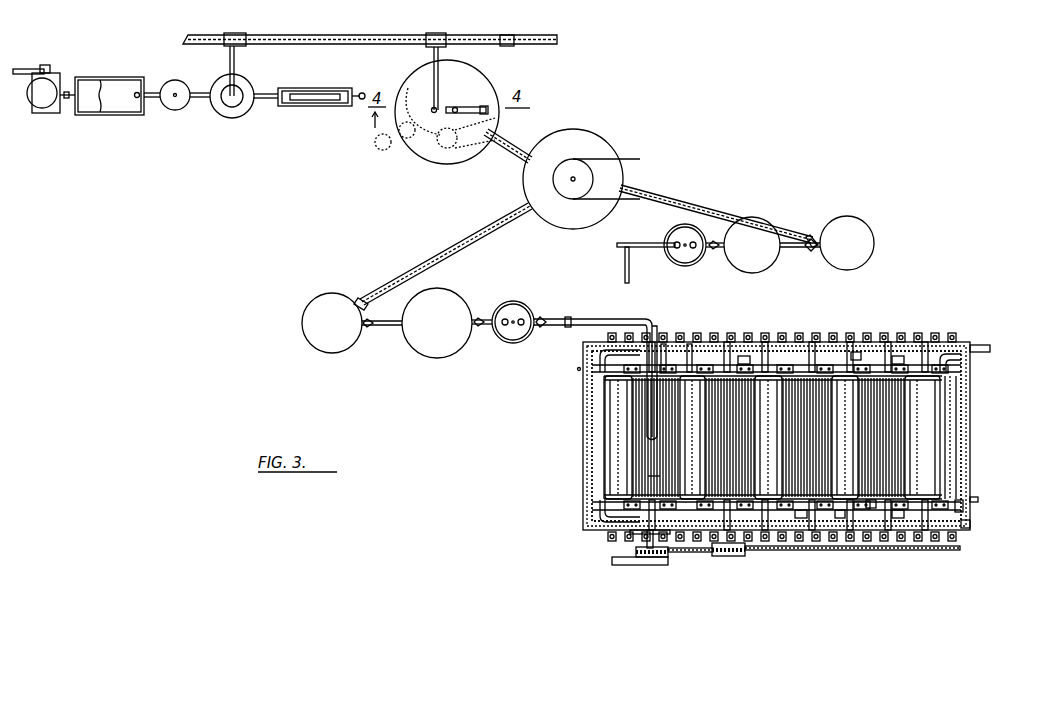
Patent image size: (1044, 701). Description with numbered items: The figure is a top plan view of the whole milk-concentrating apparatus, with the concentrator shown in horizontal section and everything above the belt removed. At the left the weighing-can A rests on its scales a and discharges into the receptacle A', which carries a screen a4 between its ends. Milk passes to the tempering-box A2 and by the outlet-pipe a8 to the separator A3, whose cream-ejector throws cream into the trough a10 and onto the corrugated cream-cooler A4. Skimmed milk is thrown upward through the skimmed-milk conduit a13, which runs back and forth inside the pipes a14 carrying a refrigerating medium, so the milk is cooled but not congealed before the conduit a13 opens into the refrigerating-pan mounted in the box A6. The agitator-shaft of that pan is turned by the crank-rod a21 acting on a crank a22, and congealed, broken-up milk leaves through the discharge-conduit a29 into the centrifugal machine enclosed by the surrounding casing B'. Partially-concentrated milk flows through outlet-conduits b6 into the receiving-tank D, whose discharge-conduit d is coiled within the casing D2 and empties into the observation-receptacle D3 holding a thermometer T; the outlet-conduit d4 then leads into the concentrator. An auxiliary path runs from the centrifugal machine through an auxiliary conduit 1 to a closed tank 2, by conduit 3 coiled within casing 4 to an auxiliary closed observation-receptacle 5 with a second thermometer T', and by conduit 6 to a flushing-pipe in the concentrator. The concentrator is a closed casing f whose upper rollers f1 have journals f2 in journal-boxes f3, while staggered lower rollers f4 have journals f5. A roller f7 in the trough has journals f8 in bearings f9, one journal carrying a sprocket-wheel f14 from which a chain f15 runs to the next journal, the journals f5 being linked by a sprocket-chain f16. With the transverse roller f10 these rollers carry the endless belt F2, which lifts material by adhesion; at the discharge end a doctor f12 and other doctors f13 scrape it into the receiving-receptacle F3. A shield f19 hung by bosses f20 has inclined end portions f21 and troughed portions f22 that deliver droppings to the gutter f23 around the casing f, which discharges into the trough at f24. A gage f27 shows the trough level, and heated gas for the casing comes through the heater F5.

The scales a is at (42, 70).
The weighing-can A is at (43, 93).
The receptacle A' is at (109, 87).
The screen a4 is at (101, 94).
The tempering-box A2 is at (175, 86).
The outlet-pipe a8 is at (202, 100).
The separator A3 is at (232, 104).
The skimmed-milk conduit a13 is at (236, 68).
The trough a10 is at (266, 101).
The corrugated cream-cooler A4 is at (321, 108).
The pipes a14 is at (318, 37).
The box A6 is at (437, 112).
The crank a22 is at (458, 108).
The crank-rod a21 is at (477, 114).
The discharge-conduit a29 is at (508, 144).
The surrounding casing B' is at (581, 179).
The auxiliary conduit 1 is at (670, 205).
The second thermometer T' is at (685, 243).
The conduit 6 is at (640, 248).
The auxiliary closed observation-receptacle 5 is at (690, 262).
The casing 4 is at (752, 245).
The conduit 3 is at (800, 254).
The closed tank 2 is at (847, 243).
The outlet-conduits b6 is at (453, 253).
The receiving-tank D is at (332, 323).
The discharge-conduit d is at (381, 326).
The casing D2 is at (437, 323).
The thermometer T is at (518, 304).
The observation-receptacle D3 is at (511, 330).
The outlet-conduit d4 is at (606, 321).
The closed casing f is at (968, 389).
The rollers f1 is at (965, 510).
The journals f2 is at (695, 333).
The journal-boxes f3 is at (730, 334).
The journals f5 is at (812, 333).
The endless belt F2 is at (773, 437).
The doctors f13 is at (963, 430).
The gutter discharge f24 is at (602, 350).
The gutter f23 is at (590, 351).
The gage f27 is at (577, 370).
The transverse roller f10 is at (608, 371).
The inclined end portions f21 is at (677, 362).
The bearings f9 is at (690, 332).
The boss f20 is at (742, 358).
The shield f19 is at (855, 334).
The transverse troughed portions f22 is at (895, 357).
The doctor f12 is at (943, 368).
The heater F5 is at (990, 348).
The roller f7 is at (650, 477).
The journals f8 is at (655, 563).
The sprocket-wheel f14 is at (683, 555).
The chain f15 is at (688, 557).
The sprocket-chain f16 is at (840, 525).
The rollers f4 is at (872, 505).
The receiving-receptacle F3 is at (970, 525).